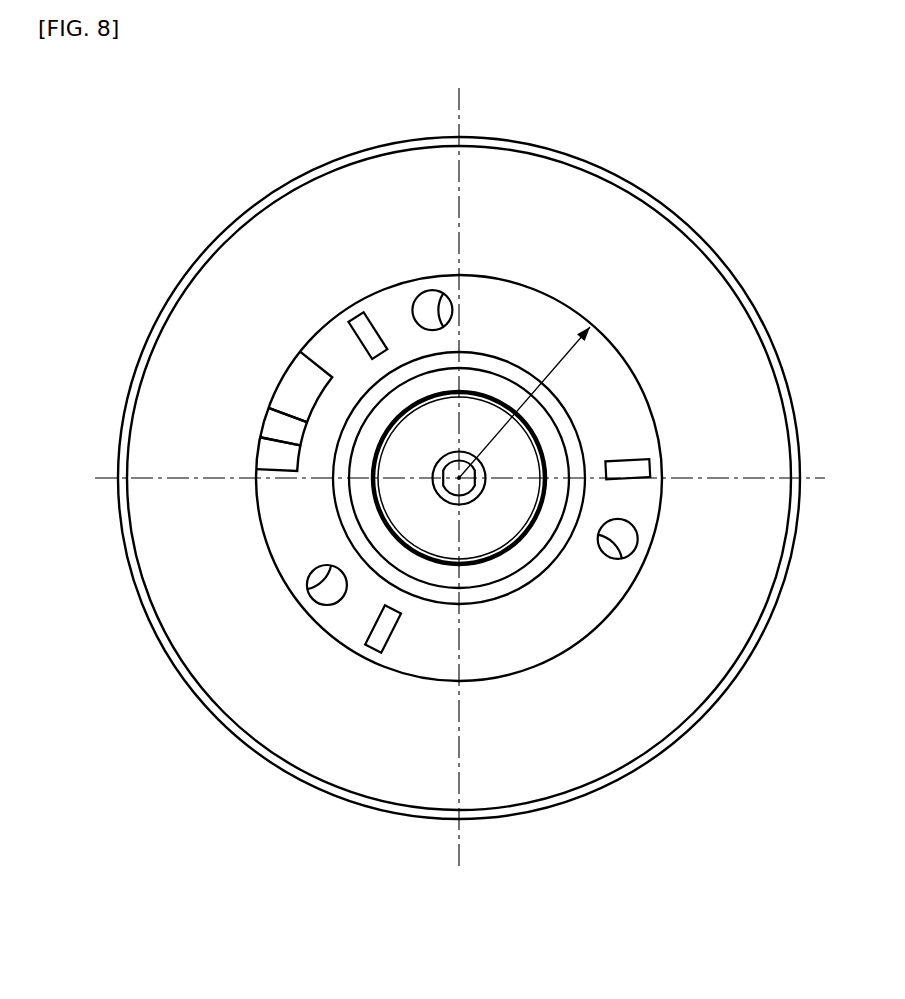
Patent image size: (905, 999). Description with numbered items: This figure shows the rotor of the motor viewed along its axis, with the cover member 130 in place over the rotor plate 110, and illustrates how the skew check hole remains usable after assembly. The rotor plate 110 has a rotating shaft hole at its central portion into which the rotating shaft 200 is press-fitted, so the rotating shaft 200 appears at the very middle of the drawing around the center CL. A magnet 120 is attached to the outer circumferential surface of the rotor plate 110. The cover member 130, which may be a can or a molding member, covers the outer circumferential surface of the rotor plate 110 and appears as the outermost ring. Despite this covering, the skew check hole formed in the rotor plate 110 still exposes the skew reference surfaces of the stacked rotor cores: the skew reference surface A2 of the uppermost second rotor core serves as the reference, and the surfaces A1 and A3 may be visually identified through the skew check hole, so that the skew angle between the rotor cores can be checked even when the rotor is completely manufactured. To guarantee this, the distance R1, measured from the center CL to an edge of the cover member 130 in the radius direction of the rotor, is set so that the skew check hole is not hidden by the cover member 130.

The cover member 130 is at (630, 182).
The magnet 120 is at (285, 363).
The rotor plate 110 is at (620, 407).
The rotating shaft 200 is at (497, 513).
The distance R1 is at (565, 357).
The center CL is at (459, 478).
The skew reference surface A1 is at (268, 448).
The skew reference surface A2 is at (270, 480).
The skew reference surface A3 is at (277, 415).